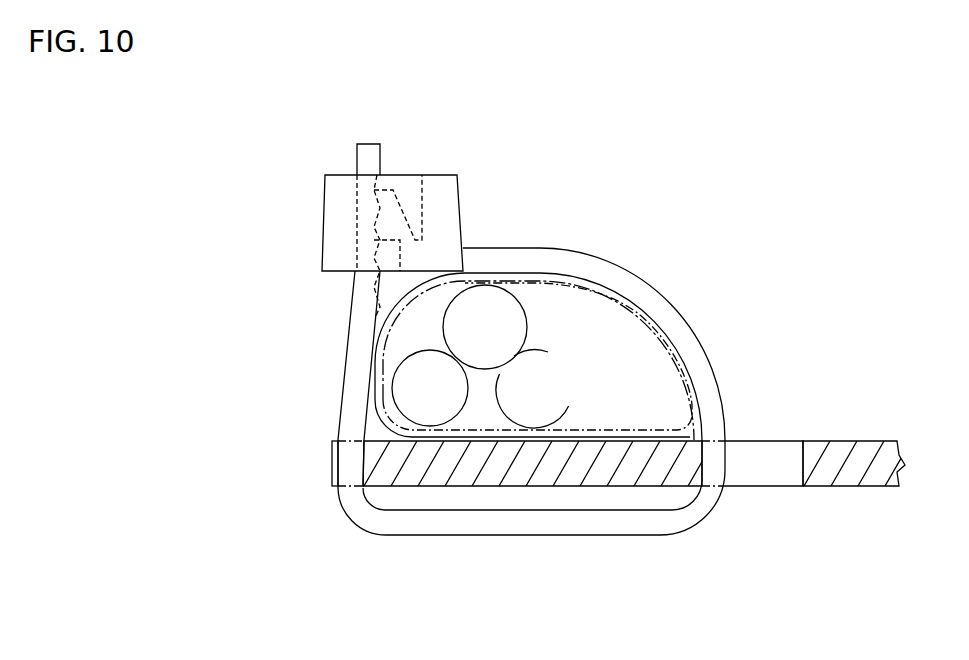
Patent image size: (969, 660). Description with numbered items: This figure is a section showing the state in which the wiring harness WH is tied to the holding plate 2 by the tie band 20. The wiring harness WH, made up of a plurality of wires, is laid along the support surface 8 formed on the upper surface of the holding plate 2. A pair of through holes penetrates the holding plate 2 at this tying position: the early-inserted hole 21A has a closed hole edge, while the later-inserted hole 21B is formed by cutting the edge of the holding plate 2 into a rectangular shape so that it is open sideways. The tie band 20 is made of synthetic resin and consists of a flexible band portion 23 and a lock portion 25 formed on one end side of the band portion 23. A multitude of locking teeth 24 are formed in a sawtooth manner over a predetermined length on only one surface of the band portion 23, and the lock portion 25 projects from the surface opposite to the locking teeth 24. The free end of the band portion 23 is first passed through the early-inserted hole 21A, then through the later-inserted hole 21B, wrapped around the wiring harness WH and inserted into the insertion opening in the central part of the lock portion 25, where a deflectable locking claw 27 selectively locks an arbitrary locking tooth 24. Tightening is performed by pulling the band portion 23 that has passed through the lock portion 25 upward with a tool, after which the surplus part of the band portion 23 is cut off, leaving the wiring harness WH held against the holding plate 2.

The holding plate 2 is at (867, 487).
The support surface 8 is at (859, 441).
The tie band 20 is at (343, 348).
The early-inserted hole 21A is at (762, 478).
The later-inserted hole 21B is at (333, 481).
The band portion 23 is at (533, 530).
The locking teeth 24 is at (365, 307).
The lock portion 25 is at (328, 220).
The locking claw 27 is at (395, 188).
The wiring harness WH is at (515, 303).